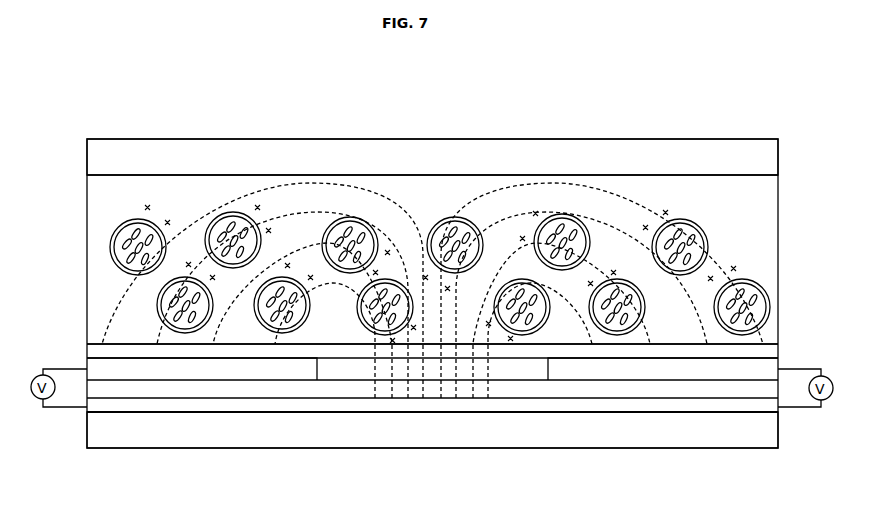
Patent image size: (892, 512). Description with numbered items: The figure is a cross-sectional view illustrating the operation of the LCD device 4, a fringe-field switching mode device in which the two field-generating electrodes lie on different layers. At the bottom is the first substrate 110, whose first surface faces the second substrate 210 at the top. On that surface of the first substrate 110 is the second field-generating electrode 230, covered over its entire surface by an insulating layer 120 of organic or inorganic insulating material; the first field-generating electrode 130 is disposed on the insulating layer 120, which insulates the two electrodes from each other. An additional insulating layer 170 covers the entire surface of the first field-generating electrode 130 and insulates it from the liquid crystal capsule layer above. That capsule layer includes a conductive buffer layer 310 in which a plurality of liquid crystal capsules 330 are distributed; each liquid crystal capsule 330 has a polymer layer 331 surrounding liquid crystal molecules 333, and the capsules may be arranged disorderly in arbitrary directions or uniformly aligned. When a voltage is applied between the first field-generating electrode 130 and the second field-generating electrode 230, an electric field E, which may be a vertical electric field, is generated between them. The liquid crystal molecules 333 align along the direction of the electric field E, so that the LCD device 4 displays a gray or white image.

The LCD device 4 is at (118, 96).
The first substrate 110 is at (120, 440).
The insulating layer 120 is at (422, 395).
The first field-generating electrode 130 is at (226, 370).
The insulating layer 170 is at (95, 349).
The second substrate 210 is at (88, 155).
The second field-generating electrode 230 is at (330, 370).
The conductive buffer layer 310 is at (90, 195).
The liquid crystal capsule 330 is at (46, 241).
The polymer layer 331 is at (112, 238).
The liquid crystal molecules 333 is at (117, 248).
The electric field E is at (310, 182).